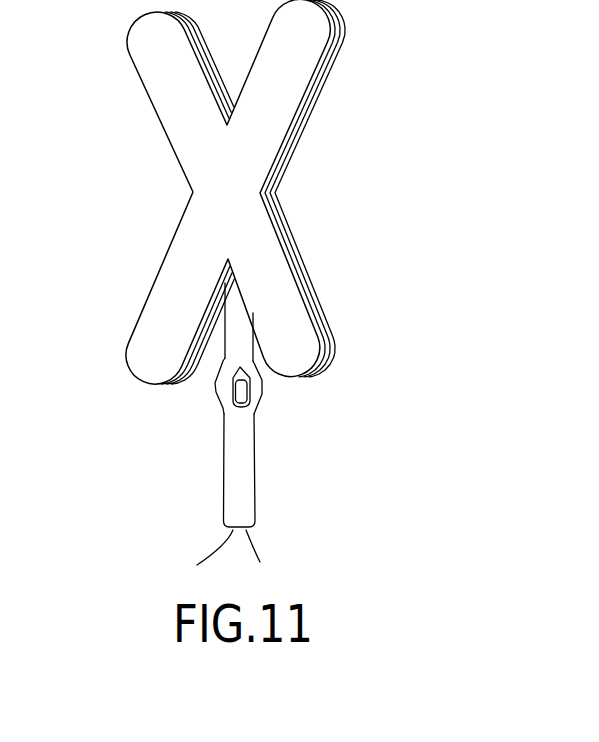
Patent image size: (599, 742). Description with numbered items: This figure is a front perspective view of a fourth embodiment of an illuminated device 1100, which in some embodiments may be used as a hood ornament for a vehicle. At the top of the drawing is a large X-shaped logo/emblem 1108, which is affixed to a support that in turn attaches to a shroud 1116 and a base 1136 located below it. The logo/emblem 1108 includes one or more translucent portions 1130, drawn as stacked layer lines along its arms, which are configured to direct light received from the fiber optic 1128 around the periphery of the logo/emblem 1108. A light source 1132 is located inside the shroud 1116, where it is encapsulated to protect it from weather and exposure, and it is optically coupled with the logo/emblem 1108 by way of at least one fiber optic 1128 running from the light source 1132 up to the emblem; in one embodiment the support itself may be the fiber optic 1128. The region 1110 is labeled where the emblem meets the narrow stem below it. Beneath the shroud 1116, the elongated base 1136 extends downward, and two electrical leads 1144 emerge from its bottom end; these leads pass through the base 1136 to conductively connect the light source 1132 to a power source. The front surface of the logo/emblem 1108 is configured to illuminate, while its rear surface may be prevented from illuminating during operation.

The illuminated device 1100 is at (418, 61).
The logo/emblem 1108 is at (153, 83).
The junction region 1110 is at (238, 312).
The shroud 1116 is at (217, 387).
The fiber optic 1128 is at (253, 384).
The translucent portions 1130 is at (310, 120).
The light source 1132 is at (237, 406).
The base 1136 is at (256, 515).
The electrical leads 1144 is at (202, 556).